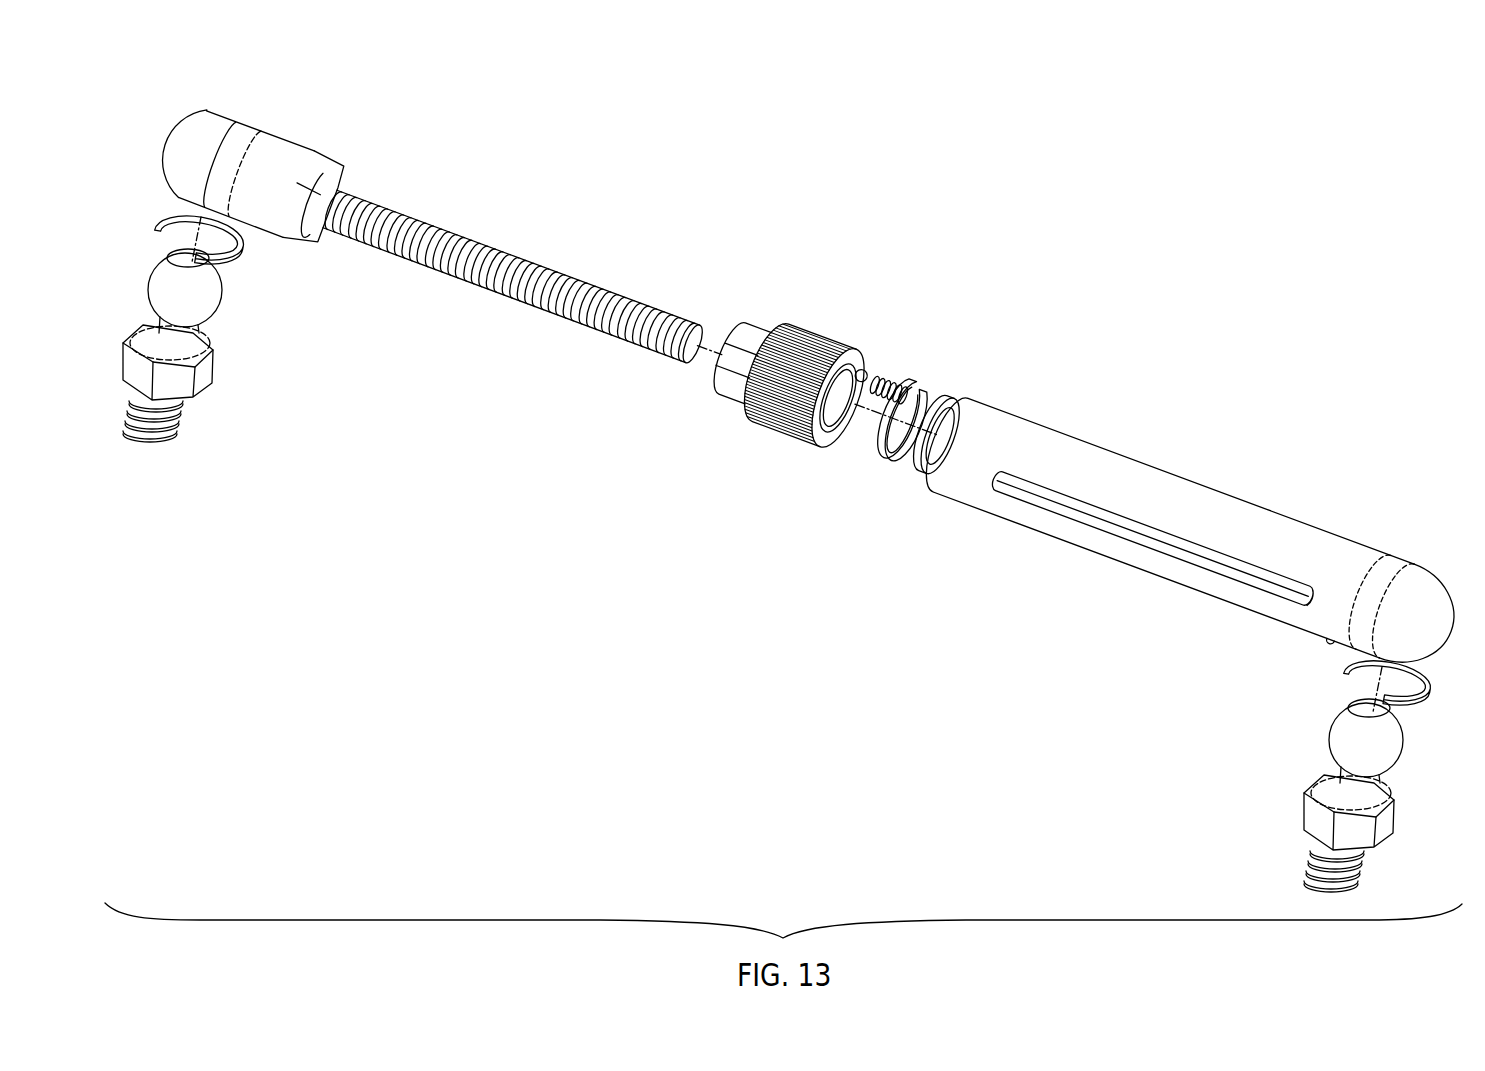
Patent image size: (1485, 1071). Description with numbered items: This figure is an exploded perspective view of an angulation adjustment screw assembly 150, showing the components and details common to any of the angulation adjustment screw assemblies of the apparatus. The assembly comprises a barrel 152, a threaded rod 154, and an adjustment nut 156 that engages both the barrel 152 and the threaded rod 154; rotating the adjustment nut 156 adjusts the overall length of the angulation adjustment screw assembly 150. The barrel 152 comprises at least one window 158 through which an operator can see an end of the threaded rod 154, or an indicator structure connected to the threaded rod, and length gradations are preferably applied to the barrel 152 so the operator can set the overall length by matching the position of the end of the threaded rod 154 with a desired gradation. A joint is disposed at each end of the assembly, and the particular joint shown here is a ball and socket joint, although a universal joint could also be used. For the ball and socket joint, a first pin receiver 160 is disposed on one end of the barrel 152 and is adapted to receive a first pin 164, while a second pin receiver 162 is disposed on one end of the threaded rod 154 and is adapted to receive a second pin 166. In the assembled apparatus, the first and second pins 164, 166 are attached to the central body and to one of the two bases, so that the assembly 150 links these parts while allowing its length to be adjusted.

The angulation adjustment screw assembly 150 is at (1252, 343).
The barrel 152 is at (1190, 531).
The threaded rod 154 is at (480, 237).
The adjustment nut 156 is at (827, 340).
The window 158 is at (1103, 527).
The first pin receiver 160 is at (1398, 627).
The second pin receiver 162 is at (217, 122).
The first pin 164 is at (1338, 732).
The second pin 166 is at (205, 305).